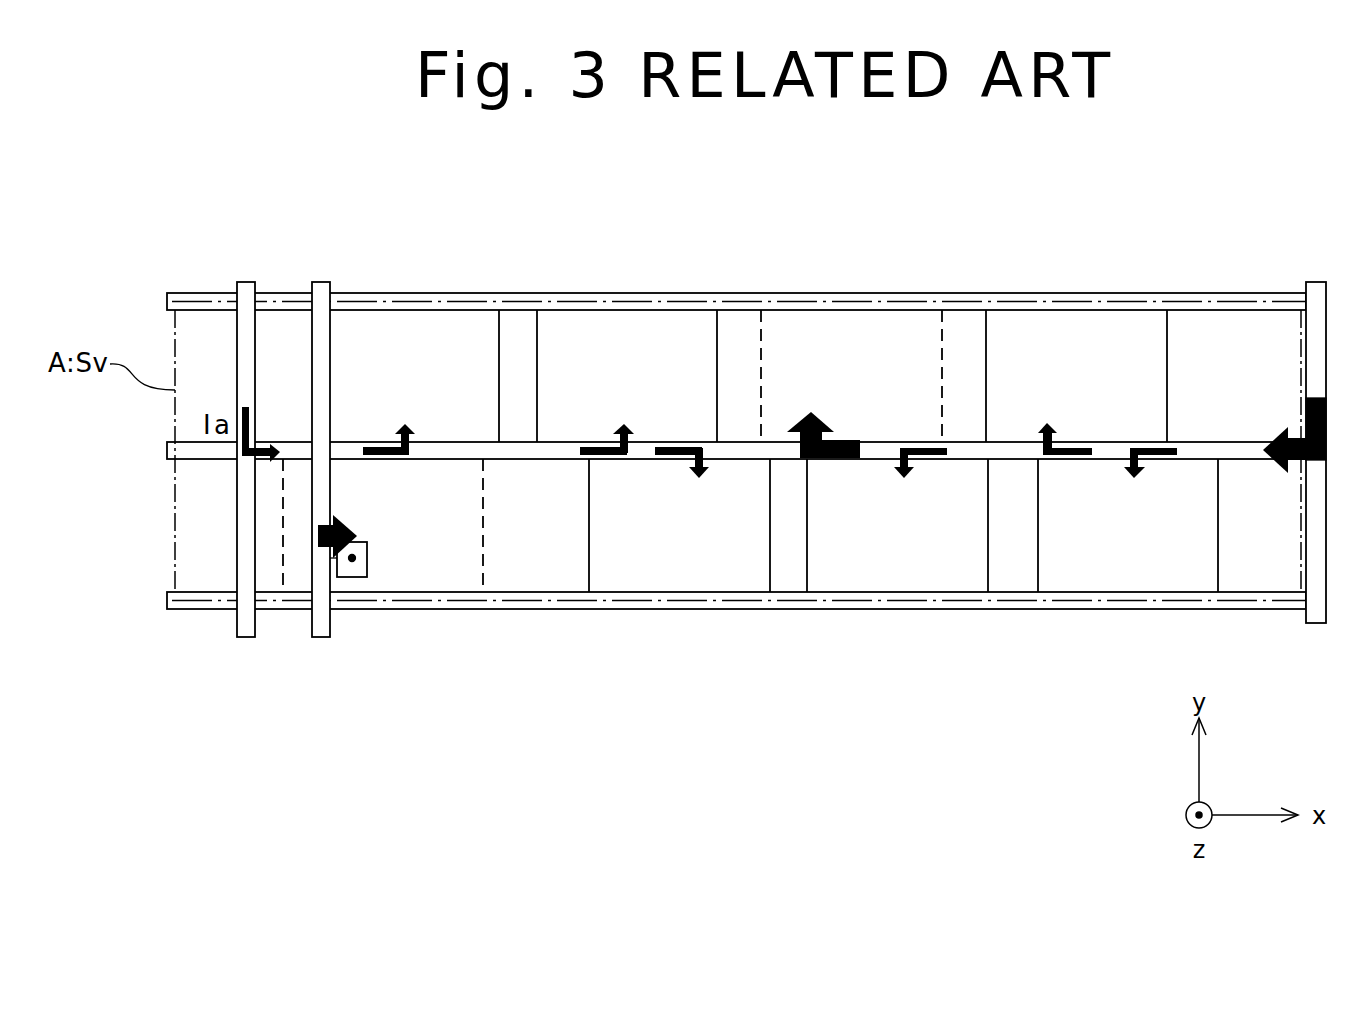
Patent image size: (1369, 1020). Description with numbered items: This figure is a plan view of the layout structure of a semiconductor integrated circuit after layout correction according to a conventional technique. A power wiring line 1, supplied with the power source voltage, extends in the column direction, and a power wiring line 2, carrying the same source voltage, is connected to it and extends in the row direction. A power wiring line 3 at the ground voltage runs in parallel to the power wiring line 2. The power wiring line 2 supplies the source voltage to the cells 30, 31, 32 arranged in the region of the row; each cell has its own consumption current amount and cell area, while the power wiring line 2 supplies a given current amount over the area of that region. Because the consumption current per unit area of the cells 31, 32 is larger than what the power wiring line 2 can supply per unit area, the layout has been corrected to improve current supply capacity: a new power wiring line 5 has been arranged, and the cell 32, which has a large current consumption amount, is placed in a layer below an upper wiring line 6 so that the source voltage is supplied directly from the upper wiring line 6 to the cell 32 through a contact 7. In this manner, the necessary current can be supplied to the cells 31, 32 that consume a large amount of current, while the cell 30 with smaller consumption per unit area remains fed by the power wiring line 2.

The power wiring line 1 is at (246, 640).
The power wiring line 2 is at (172, 462).
The power wiring line 3 is at (169, 292).
The new power wiring line 5 is at (1306, 625).
The upper wiring line 6 is at (330, 290).
The contact 7 is at (352, 578).
The cell 30 is at (613, 320).
The cell 31 is at (838, 320).
The cell 32 is at (453, 585).